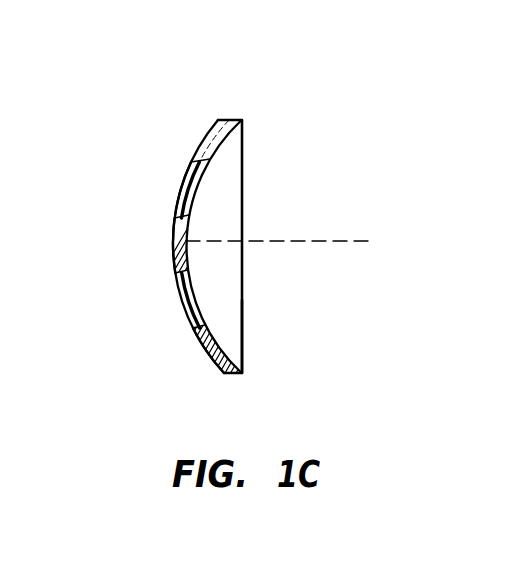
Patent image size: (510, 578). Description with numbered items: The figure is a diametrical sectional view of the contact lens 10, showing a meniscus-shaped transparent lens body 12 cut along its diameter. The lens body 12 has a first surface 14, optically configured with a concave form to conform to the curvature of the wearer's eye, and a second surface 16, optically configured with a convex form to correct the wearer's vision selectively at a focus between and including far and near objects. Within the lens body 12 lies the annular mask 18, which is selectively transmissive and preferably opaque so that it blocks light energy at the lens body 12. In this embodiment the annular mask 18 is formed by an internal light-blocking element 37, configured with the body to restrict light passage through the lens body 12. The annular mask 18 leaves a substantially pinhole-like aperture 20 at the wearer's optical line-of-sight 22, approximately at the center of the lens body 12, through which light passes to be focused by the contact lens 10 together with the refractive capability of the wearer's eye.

The contact lens 10 is at (154, 158).
The lens body 12 is at (218, 121).
The first surface 14 is at (220, 354).
The second surface 16 is at (213, 360).
The annular mask 18 is at (177, 184).
The aperture 20 is at (161, 244).
The optical line-of-sight 22 is at (307, 240).
The light-blocking element 37 is at (196, 172).